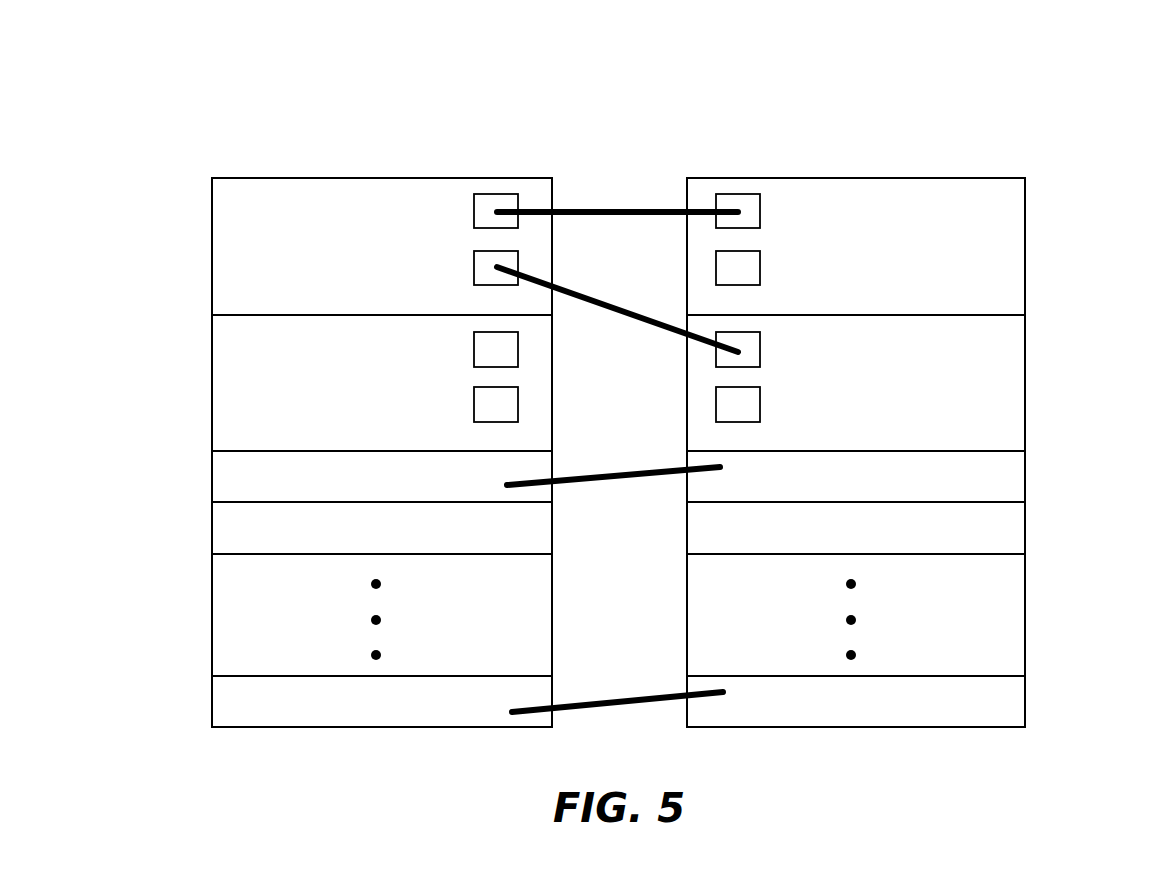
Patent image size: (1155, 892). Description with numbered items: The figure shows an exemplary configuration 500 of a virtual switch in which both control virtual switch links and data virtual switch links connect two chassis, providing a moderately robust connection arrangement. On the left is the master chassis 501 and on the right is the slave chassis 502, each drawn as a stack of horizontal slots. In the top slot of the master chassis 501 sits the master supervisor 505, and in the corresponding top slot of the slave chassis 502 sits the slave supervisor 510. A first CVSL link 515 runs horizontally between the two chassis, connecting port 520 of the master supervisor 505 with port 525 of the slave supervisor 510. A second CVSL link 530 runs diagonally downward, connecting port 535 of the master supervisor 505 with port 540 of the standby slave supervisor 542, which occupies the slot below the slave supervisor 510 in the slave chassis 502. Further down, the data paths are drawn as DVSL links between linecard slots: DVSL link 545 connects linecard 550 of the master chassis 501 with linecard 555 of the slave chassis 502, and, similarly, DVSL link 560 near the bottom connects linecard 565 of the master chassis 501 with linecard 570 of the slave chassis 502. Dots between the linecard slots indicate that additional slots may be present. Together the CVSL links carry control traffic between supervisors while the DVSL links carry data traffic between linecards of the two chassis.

The virtual switching system 500 is at (780, 119).
The master chassis 501 is at (278, 170).
The slave chassis 502 is at (990, 176).
The master supervisor 505 is at (236, 198).
The slave supervisor 510 is at (1010, 207).
The CVSL link 515 is at (620, 217).
The port 520 is at (507, 202).
The port 525 is at (723, 202).
The CVSL link 530 is at (570, 288).
The port 535 is at (502, 260).
The port 540 is at (730, 338).
The standby slave supervisor 542 is at (1010, 343).
The DVSL link 545 is at (592, 477).
The linecard 550 is at (236, 474).
The linecard 555 is at (1010, 473).
The DVSL link 560 is at (578, 710).
The linecard 565 is at (236, 697).
The linecard 570 is at (1010, 693).